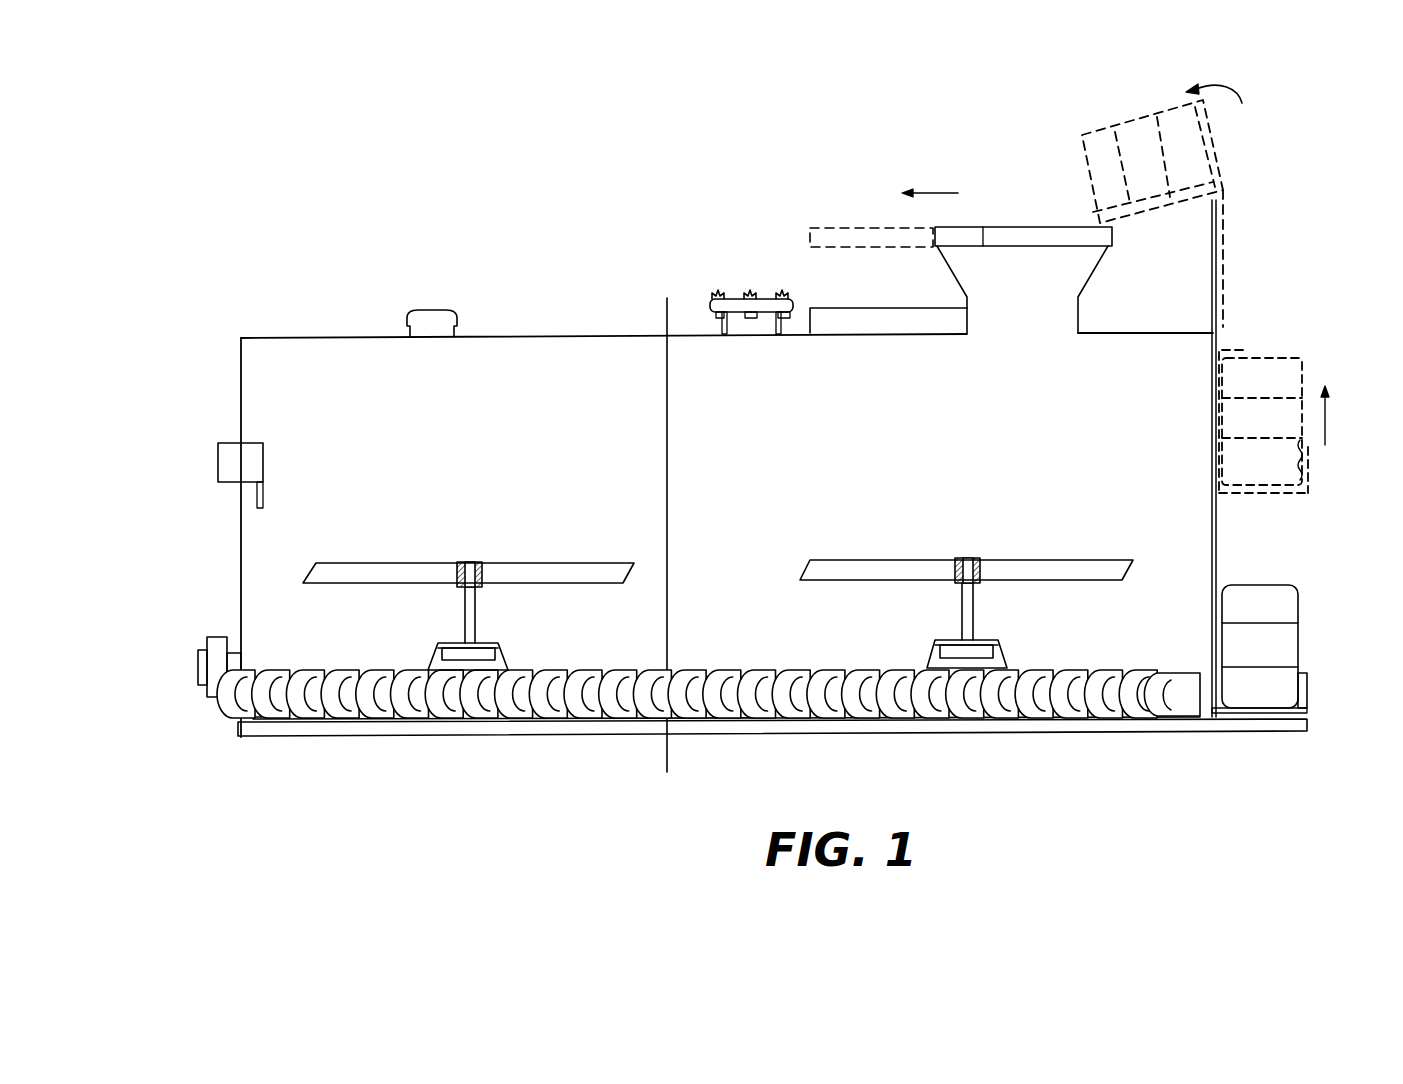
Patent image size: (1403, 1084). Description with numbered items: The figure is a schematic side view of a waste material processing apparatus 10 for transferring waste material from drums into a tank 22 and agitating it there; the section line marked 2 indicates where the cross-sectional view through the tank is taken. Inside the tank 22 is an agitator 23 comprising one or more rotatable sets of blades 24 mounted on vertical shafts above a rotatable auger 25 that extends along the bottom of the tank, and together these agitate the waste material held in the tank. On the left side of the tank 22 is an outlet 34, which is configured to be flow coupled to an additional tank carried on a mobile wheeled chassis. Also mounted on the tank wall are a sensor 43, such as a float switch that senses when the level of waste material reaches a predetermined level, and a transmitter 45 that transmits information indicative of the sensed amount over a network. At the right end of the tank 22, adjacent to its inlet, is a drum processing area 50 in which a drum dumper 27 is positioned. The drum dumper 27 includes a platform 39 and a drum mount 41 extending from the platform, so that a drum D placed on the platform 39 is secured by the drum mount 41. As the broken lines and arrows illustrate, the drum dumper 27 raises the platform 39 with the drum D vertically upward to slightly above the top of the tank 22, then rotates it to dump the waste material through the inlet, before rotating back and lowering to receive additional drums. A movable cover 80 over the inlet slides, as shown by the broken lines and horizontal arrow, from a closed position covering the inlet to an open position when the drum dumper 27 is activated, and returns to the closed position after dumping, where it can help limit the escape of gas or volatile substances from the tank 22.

The waste material processing apparatus 10 is at (548, 245).
The tank 22 is at (287, 334).
The section line 2- 2 is at (627, 312).
The movable cover 80 is at (1028, 227).
The transmitter 45 is at (222, 460).
The sensor 43 is at (264, 460).
The outlet 34 is at (208, 650).
The rotatable auger 25 is at (763, 670).
The agitator 23 is at (470, 527).
The blades 24 is at (565, 570).
The drum processing area 50 is at (1307, 614).
The drum D is at (1258, 607).
The drum mount 41 is at (1310, 683).
The drum dumper 27 is at (1312, 704).
The platform 39 is at (1288, 716).